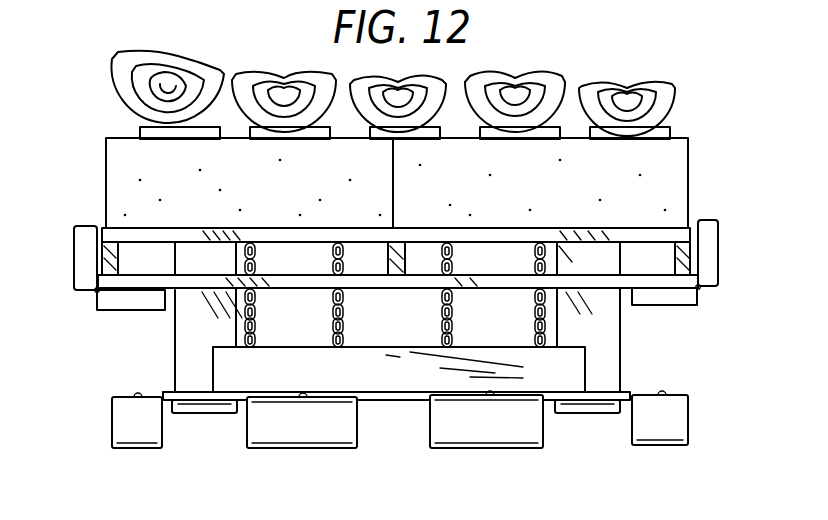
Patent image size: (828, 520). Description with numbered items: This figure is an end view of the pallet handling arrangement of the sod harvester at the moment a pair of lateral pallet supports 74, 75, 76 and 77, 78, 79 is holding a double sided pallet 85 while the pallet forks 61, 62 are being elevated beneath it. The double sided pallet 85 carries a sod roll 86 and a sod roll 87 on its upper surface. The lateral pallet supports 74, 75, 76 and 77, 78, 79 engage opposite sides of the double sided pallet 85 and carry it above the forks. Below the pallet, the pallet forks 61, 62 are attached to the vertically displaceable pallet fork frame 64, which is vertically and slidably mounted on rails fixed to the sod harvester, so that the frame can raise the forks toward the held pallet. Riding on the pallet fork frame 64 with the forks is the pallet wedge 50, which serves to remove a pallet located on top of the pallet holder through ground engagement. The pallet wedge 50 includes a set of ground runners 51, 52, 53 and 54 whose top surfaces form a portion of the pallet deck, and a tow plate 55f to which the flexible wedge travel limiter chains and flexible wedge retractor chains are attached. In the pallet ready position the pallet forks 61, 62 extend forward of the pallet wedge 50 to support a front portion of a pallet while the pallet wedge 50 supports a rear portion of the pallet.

The pallet wedge 50 is at (188, 394).
The ground runner 51 is at (132, 437).
The ground runner 52 is at (307, 427).
The ground runner 53 is at (485, 432).
The ground runner 54 is at (657, 435).
The tow plate 55f is at (570, 372).
The pallet fork 61 is at (590, 413).
The pallet fork 62 is at (212, 413).
The vertically displaceable pallet fork frame 64 is at (607, 340).
The lateral pallet support 74 is at (82, 238).
The lateral pallet support 75 is at (95, 292).
The lateral pallet support 76 is at (135, 302).
The lateral pallet support 77 is at (710, 247).
The lateral pallet support 78 is at (700, 289).
The lateral pallet support 79 is at (670, 300).
The double sided pallet 85 is at (652, 232).
The sod roll 86 is at (668, 165).
The sod roll 87 is at (638, 112).